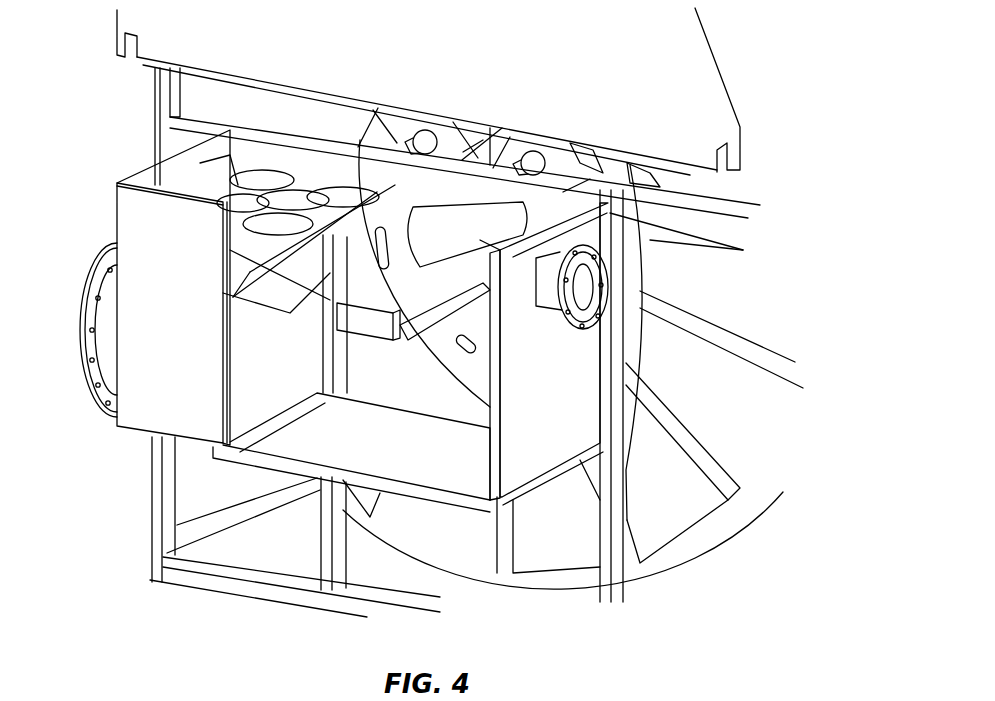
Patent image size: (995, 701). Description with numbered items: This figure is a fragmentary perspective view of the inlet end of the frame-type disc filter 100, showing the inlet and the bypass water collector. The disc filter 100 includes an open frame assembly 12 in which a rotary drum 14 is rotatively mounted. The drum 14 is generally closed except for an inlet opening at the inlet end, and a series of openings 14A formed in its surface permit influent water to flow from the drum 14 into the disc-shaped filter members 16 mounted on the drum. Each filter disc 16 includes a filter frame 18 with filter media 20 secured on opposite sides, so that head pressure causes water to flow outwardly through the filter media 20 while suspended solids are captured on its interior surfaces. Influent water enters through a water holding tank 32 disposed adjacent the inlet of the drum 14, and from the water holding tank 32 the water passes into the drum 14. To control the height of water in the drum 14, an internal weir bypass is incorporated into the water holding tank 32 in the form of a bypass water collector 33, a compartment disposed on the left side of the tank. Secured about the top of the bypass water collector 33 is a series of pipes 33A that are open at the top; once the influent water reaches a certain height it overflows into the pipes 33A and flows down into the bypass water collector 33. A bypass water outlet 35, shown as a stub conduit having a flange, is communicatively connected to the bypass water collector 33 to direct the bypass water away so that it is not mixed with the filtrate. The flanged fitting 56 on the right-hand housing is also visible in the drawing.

The disc filter 100 is at (788, 252).
The frame assembly 12 is at (129, 539).
The rotary drum 14 is at (395, 200).
The openings 14A is at (413, 232).
The disc-shaped filter members 16 is at (694, 584).
The filter frame 18 is at (712, 528).
The filter media 20 is at (720, 398).
The water holding tank 32 is at (430, 447).
The bypass water collector 33 is at (155, 400).
The pipes 33A is at (213, 187).
The bypass water outlet 35 is at (97, 347).
The flange 56 is at (598, 253).